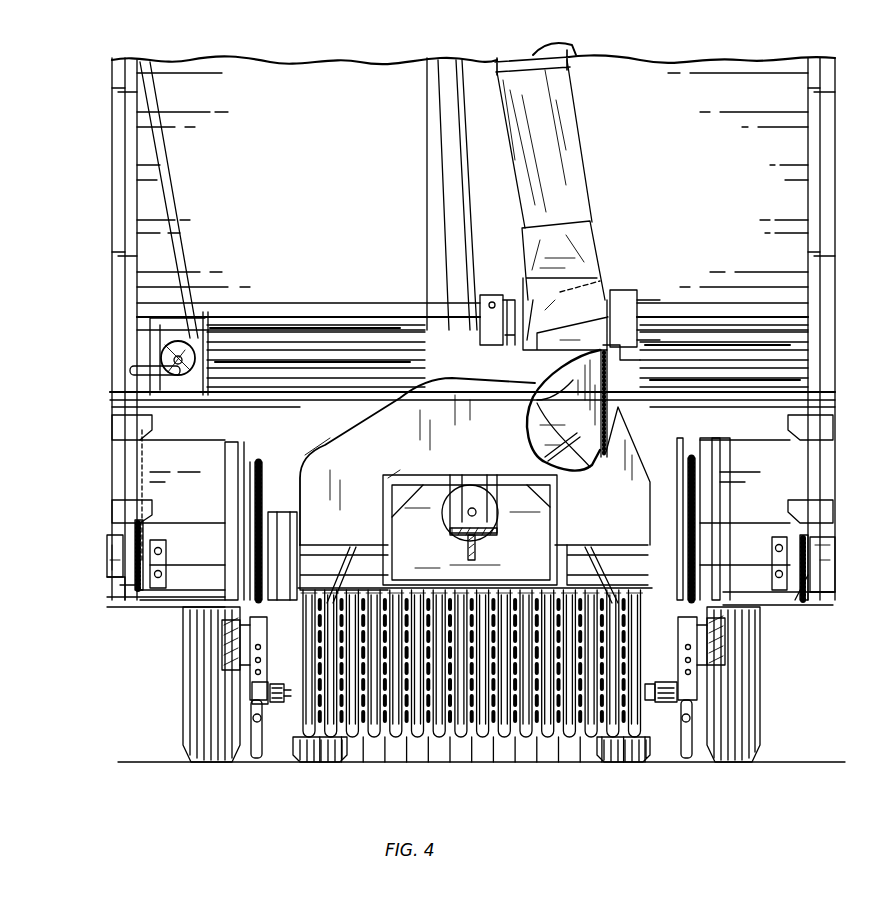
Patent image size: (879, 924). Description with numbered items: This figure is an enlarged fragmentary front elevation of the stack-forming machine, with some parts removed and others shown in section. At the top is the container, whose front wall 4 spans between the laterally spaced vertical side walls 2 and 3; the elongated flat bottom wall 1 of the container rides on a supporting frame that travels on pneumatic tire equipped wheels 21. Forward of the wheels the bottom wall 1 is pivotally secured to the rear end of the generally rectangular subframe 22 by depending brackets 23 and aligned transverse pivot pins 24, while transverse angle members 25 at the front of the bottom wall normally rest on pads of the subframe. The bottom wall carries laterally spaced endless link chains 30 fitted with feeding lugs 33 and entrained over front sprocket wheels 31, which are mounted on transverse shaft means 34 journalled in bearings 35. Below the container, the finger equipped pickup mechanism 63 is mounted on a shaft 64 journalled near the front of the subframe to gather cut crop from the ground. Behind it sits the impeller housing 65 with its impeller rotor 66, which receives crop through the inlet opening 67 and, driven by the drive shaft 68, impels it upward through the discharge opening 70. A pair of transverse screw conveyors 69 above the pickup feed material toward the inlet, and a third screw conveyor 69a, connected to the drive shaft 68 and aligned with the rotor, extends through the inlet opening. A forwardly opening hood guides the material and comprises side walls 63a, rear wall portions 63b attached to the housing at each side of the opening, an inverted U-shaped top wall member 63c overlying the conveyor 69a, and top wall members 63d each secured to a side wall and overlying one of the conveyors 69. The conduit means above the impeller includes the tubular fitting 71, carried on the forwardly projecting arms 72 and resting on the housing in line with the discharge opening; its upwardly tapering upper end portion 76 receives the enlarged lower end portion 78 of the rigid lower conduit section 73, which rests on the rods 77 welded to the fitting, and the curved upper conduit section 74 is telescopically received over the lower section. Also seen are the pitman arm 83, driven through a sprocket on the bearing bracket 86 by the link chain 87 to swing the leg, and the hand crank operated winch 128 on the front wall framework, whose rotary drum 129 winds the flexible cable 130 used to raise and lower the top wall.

The bottom wall 1 is at (158, 610).
The side wall 2 is at (840, 142).
The side wall 3 is at (112, 178).
The front wall 4 is at (350, 80).
The wheels 21 is at (213, 765).
The subframe 22 is at (222, 670).
The depending brackets 23 is at (222, 656).
The transverse pivot pins 24 is at (221, 641).
The transverse angle members 25 is at (782, 608).
The endless link chains 30 is at (140, 600).
The front sprocket wheels 31 is at (138, 578).
The feeding lugs 33 is at (148, 545).
The transverse shaft means 34 is at (199, 549).
The bearings 35 is at (168, 549).
The pickup mechanism 63 is at (440, 776).
The hood side walls 63a is at (305, 522).
The hood rear wall portions 63b is at (334, 459).
The hood top wall member 63c is at (394, 478).
The hood top wall members 63d is at (343, 530).
The shaft 64 is at (268, 700).
The impeller housing 65 is at (613, 412).
The impeller rotor 66 is at (545, 436).
The inlet opening 67 is at (448, 587).
The drive shaft 68 is at (468, 514).
The screw conveyors 69 is at (445, 547).
The third screw conveyor 69a is at (445, 507).
The discharge opening 70 is at (537, 400).
The tubular fitting 71 is at (585, 354).
The arms 72 is at (500, 310).
The lower conduit section 73 is at (565, 190).
The upper conduit section 74 is at (572, 58).
The tapered upper end portion 76 is at (594, 285).
The rods 77 is at (545, 336).
The enlarged lower end portion 78 is at (590, 240).
The pitman arm 83 is at (458, 172).
The bearing bracket 86 is at (490, 318).
The link chain 87 is at (487, 378).
The winch 128 is at (193, 376).
The rotary drum 129 is at (215, 332).
The flexible cable 130 is at (177, 212).